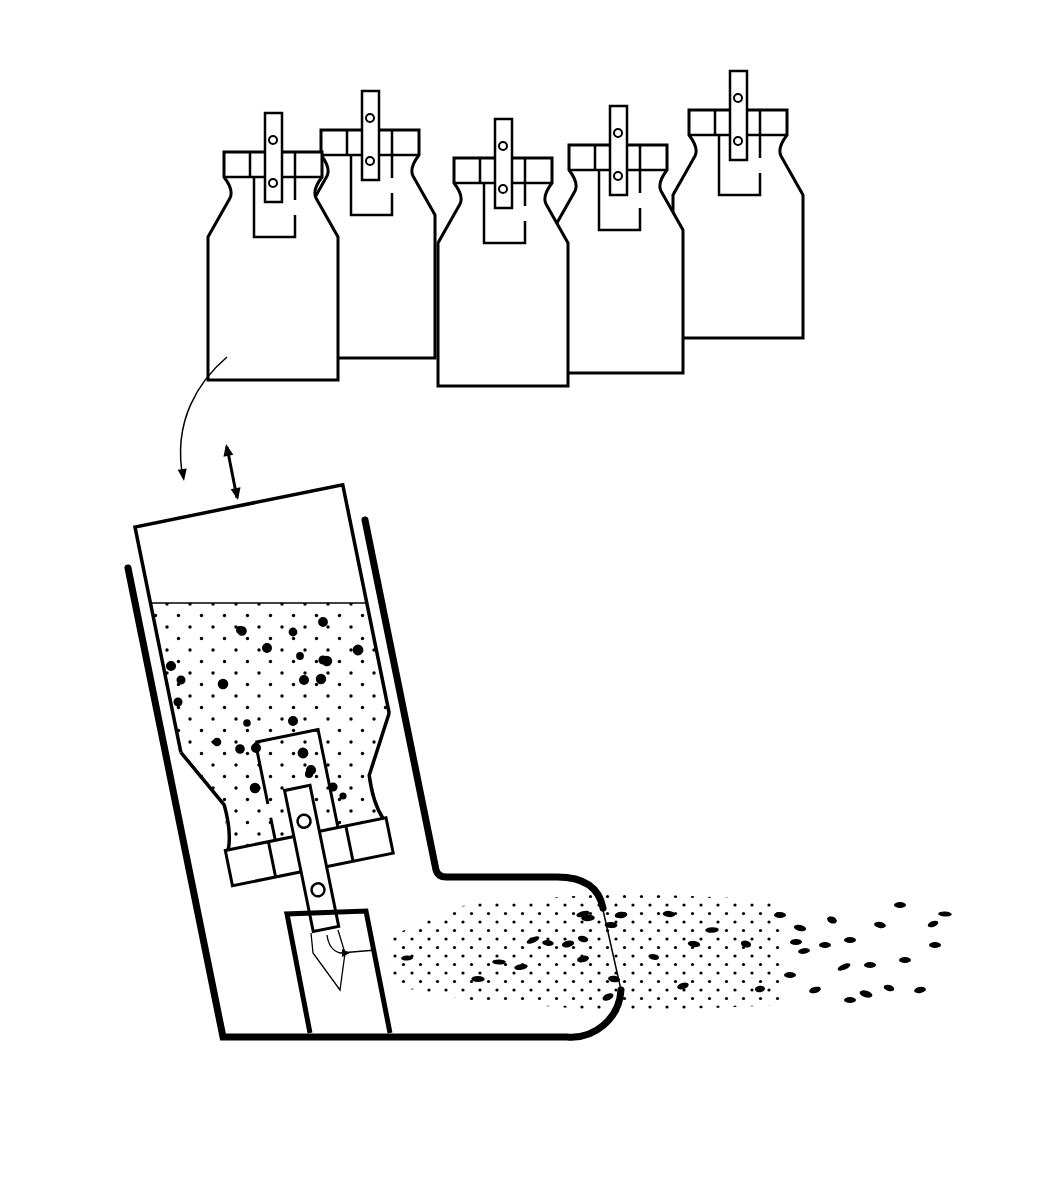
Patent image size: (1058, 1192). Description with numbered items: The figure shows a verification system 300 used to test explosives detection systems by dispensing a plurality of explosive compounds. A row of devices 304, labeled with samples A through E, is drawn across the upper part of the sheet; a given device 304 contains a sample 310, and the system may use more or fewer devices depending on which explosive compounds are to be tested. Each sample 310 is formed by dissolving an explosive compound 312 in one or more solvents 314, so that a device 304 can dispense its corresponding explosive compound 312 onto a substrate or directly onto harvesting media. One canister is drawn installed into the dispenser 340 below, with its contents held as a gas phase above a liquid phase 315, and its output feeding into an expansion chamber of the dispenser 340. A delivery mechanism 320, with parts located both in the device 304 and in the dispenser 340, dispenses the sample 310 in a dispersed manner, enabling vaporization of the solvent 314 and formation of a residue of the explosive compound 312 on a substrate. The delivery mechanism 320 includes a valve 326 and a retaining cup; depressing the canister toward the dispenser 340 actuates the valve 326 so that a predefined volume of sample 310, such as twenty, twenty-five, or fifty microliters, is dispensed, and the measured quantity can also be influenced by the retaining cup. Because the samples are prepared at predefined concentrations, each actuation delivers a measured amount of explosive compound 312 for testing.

The verification system 300 is at (65, 87).
The devices 304 is at (805, 398).
The sample 310 is at (307, 342).
The explosive compound 312 is at (875, 932).
The solvent 314 is at (637, 912).
The liquid phase 315 is at (367, 625).
The delivery mechanism 320 is at (258, 961).
The valve 326 is at (205, 839).
The dispenser 340 is at (513, 876).